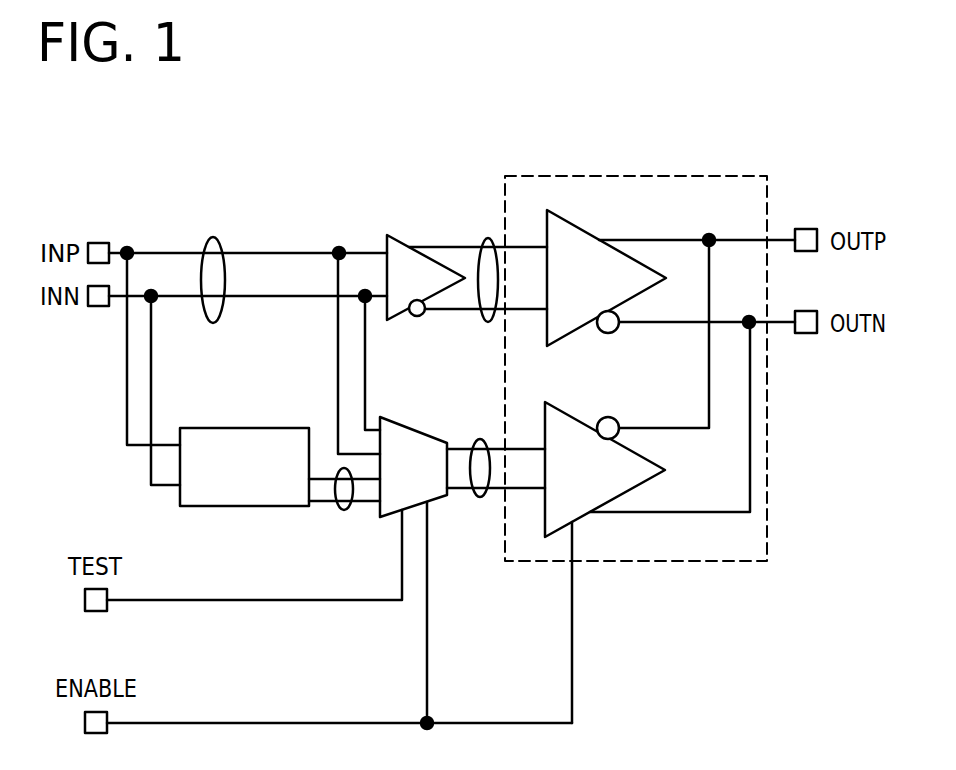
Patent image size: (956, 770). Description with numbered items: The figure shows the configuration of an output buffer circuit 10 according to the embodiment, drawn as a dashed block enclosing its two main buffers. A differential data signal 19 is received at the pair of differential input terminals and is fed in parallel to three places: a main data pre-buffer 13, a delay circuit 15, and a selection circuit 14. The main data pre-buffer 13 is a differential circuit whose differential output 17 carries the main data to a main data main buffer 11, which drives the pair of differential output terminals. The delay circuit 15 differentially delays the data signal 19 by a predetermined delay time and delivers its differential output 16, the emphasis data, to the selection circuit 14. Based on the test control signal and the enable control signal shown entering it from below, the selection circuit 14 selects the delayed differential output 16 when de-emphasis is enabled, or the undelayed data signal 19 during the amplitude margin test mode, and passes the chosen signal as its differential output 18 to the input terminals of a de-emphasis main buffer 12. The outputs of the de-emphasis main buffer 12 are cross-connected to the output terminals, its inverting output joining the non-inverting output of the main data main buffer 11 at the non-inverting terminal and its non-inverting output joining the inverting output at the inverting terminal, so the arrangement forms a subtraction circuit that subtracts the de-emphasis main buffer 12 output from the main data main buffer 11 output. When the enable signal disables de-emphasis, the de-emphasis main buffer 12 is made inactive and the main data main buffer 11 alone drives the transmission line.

The output buffer circuit 10 is at (768, 177).
The main data main buffer 11 is at (580, 228).
The de-emphasis main buffer 12 is at (580, 417).
The main data pre-buffer 13 is at (397, 237).
The selection circuit 14 is at (413, 428).
The delay circuit 15 is at (232, 428).
The differential output of the delay circuit 16 is at (344, 510).
The differential output of the main data pre-buffer 17 is at (488, 238).
The differential output of the selection circuit 18 is at (480, 497).
The data signal 19 is at (213, 237).